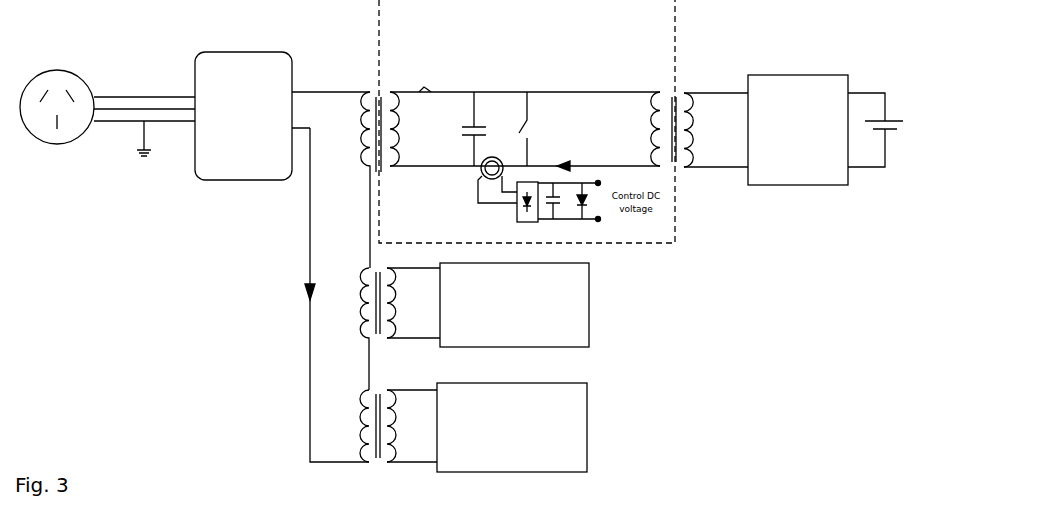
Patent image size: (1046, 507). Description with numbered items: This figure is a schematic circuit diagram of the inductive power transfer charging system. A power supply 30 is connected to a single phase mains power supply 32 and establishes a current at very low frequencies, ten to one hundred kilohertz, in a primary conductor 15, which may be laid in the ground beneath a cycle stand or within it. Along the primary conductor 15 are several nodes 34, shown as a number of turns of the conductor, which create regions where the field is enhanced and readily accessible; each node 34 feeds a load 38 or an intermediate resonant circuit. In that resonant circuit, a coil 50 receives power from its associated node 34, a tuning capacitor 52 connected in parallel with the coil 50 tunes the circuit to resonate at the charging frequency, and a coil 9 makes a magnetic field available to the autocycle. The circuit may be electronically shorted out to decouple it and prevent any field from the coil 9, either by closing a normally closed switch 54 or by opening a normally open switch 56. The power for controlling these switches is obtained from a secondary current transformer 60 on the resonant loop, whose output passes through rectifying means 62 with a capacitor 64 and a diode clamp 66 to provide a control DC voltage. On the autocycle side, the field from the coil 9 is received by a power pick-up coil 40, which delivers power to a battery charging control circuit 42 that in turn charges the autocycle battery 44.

The mains power supply 32 is at (107, 103).
The power supply 30 is at (282, 105).
The primary conductor 15 is at (302, 346).
The node 34 is at (363, 277).
The load 38 is at (488, 367).
The coil 50 is at (525, 129).
The switch 56 is at (432, 82).
The tuning capacitor 52 is at (482, 129).
The switch 54 is at (538, 129).
The coil 9 is at (616, 123).
The secondary current transformer 60 is at (497, 174).
The rectifying means 62 is at (559, 212).
The capacitor 64 is at (554, 212).
The diode clamp 66 is at (584, 212).
The power pick-up coil 40 is at (716, 130).
The battery charging control circuit 42 is at (798, 122).
The autocycle battery 44 is at (881, 125).